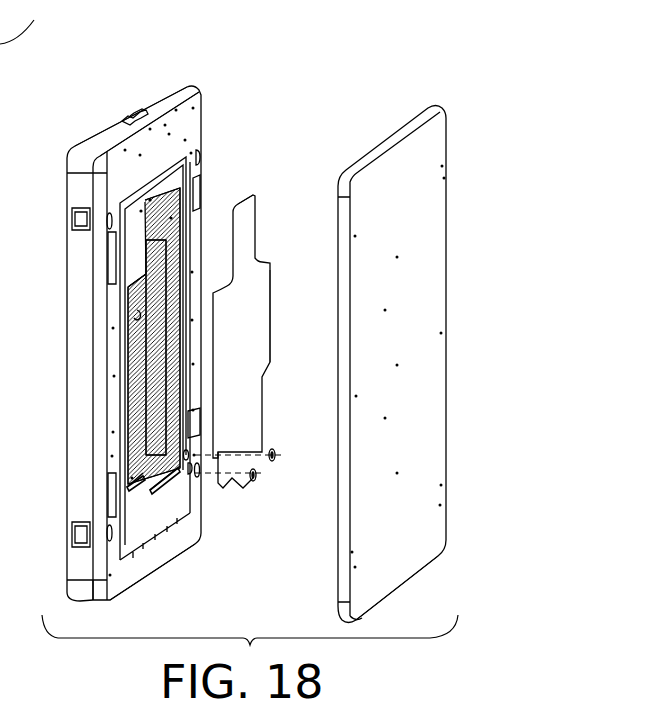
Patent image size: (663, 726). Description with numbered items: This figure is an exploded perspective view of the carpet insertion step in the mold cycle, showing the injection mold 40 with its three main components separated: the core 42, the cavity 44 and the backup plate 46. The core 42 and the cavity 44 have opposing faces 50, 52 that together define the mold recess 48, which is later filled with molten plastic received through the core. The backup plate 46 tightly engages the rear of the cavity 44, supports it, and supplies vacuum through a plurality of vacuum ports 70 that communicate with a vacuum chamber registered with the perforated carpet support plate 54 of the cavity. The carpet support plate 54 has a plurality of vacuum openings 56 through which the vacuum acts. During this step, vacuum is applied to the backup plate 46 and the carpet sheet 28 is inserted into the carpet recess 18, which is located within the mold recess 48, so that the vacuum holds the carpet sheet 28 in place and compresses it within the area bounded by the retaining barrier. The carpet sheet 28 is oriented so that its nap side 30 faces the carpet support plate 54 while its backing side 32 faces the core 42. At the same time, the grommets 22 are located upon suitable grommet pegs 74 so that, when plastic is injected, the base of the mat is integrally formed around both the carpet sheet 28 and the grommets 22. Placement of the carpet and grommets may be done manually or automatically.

The injection mold 40 is at (285, 129).
The cavity 44 is at (203, 96).
The backup plate 46 is at (160, 87).
The vacuum ports 70 is at (131, 109).
The vacuum openings 56 is at (172, 218).
The mold recess 48 is at (150, 362).
The carpet recess 18 is at (150, 423).
The carpet support plate 54 is at (137, 318).
The grommet pegs 74 is at (130, 468).
The face of cavity 52 is at (115, 583).
The nap side 30 is at (232, 236).
The carpet sheet 28 is at (251, 195).
The backing side 32 is at (246, 320).
The grommet 22 is at (254, 483).
The core 42 is at (427, 141).
The face of core 50 is at (340, 606).